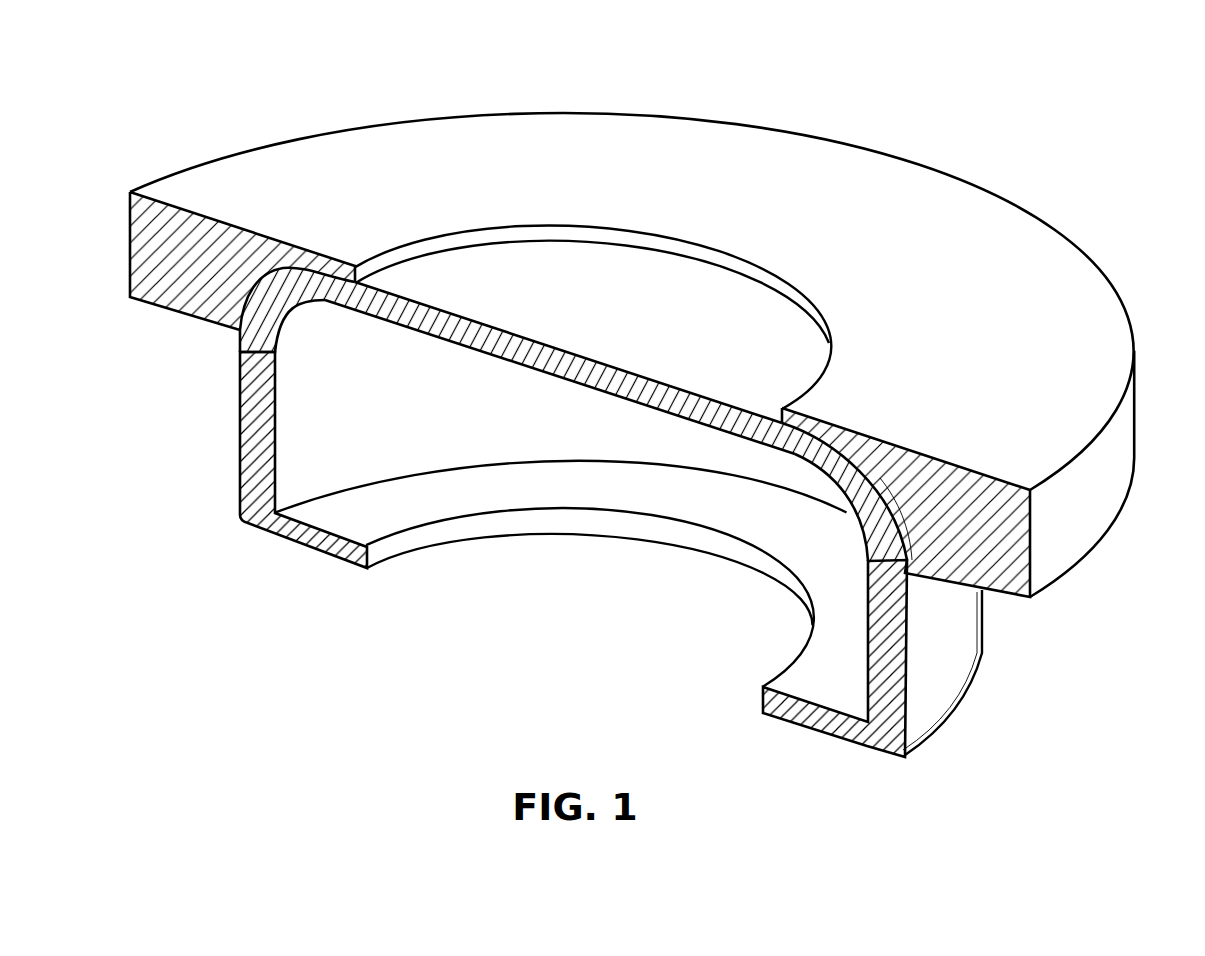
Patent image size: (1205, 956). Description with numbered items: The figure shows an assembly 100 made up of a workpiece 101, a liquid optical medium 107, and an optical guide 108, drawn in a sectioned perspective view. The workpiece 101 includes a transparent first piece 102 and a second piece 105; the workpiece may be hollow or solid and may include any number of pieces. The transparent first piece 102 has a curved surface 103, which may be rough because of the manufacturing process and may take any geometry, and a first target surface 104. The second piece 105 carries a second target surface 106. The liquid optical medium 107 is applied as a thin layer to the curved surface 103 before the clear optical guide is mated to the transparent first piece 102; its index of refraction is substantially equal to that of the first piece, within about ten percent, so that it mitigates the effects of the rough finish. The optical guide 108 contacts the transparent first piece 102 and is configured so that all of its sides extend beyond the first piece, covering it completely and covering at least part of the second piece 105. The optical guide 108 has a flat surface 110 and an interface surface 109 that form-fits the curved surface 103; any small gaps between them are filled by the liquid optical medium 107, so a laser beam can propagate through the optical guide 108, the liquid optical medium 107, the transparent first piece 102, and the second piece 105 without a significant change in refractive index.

The assembly 100 is at (1066, 100).
The workpiece 101 is at (234, 505).
The transparent first piece 102 is at (532, 290).
The curved surface 103 is at (265, 276).
The first target surface 104 is at (266, 358).
The second piece 105 is at (373, 453).
The second target surface 106 is at (258, 350).
The liquid optical medium 107 is at (907, 570).
The optical guide 108 is at (766, 150).
The interface surface 109 is at (866, 477).
The flat surface 110 is at (910, 275).